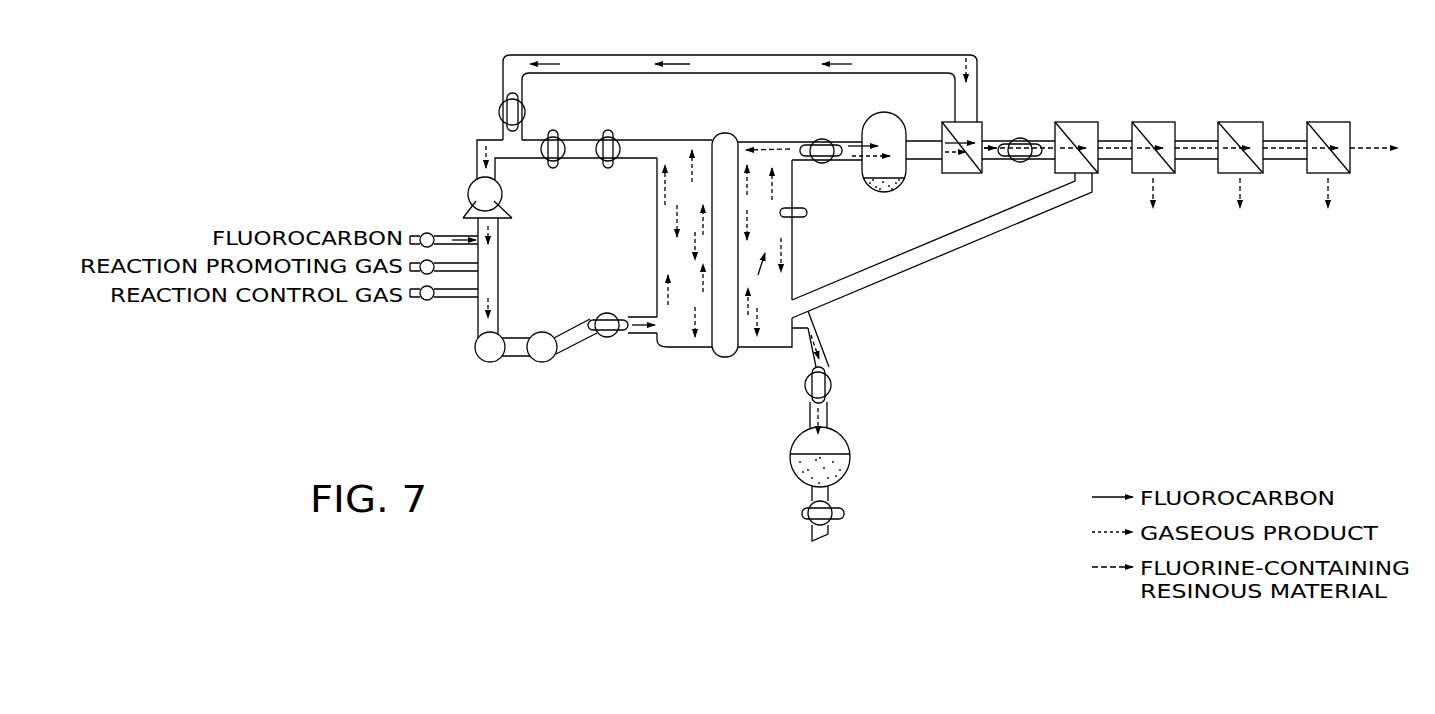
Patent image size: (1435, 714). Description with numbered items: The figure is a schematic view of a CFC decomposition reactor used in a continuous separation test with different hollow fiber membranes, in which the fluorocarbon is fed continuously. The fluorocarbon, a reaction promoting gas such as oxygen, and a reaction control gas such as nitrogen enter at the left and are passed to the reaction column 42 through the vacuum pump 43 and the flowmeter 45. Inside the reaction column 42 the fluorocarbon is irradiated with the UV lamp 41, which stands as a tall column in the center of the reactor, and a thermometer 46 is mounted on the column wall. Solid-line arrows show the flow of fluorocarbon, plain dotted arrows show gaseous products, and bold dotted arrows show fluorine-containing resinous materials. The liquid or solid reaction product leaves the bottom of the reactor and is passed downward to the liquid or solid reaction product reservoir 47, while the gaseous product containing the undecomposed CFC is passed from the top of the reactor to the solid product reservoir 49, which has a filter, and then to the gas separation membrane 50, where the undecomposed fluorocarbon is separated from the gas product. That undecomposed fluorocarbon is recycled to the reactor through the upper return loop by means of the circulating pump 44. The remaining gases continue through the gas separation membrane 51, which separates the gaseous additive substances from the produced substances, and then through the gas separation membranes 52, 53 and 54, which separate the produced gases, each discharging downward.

The UV lamp 41 is at (742, 253).
The reaction column 42 is at (656, 205).
The vacuum pump 43 is at (488, 362).
The circulating pump 44 is at (500, 193).
The flowmeter 45 is at (540, 362).
The thermometer 46 is at (807, 212).
The liquid or solid reaction product reservoir 47 is at (840, 437).
The solid product reservoir having a filter 49 is at (900, 176).
The gas separation membrane 50 is at (973, 175).
The gas separation membrane 51 is at (1086, 120).
The gas separation membrane 52 is at (1152, 120).
The gas separation membrane 53 is at (1245, 120).
The gas separation membrane 54 is at (1337, 120).